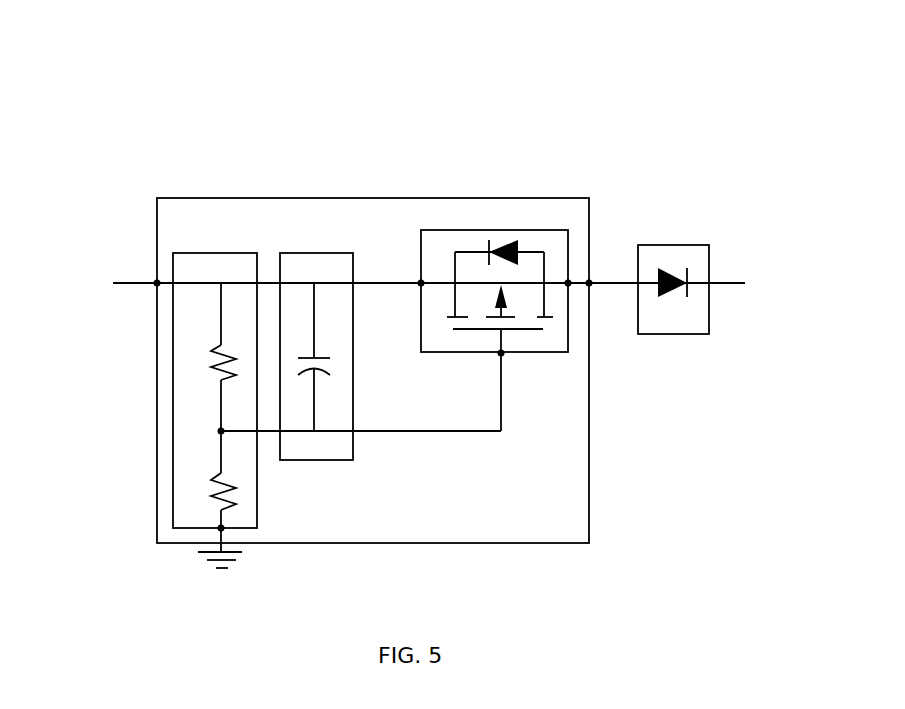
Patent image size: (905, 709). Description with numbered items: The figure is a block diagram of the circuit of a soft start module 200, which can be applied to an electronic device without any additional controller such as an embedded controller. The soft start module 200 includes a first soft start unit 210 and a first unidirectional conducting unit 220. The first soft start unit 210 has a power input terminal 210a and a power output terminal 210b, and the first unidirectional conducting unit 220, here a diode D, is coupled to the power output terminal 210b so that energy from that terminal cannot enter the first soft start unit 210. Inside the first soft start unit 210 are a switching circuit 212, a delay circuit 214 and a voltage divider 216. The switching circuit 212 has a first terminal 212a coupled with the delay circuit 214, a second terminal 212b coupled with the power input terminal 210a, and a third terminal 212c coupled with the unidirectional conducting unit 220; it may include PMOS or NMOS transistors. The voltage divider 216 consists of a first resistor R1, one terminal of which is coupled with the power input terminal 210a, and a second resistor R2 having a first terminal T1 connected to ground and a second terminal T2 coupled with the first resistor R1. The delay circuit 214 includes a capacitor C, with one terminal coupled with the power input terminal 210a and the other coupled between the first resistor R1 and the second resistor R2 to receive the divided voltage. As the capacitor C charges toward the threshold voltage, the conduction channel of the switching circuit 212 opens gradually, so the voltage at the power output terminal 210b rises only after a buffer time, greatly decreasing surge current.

The soft start module 200 is at (212, 49).
The first soft start unit 210 is at (294, 198).
The power input terminal 210a is at (157, 283).
The power output terminal 210b is at (589, 283).
The switching circuit 212 is at (483, 230).
The first terminal 212a is at (501, 353).
The second terminal 212b is at (421, 283).
The third terminal 212c is at (568, 283).
The delay circuit 214 is at (313, 460).
The voltage divider 216 is at (173, 370).
The first unidirectional conducting unit 220 is at (709, 245).
The first terminal T1 is at (221, 528).
The second terminal T2 is at (221, 431).
The first resistor R1 is at (211, 350).
The second resistor R2 is at (209, 478).
The capacitor C is at (317, 357).
The diode D is at (672, 296).